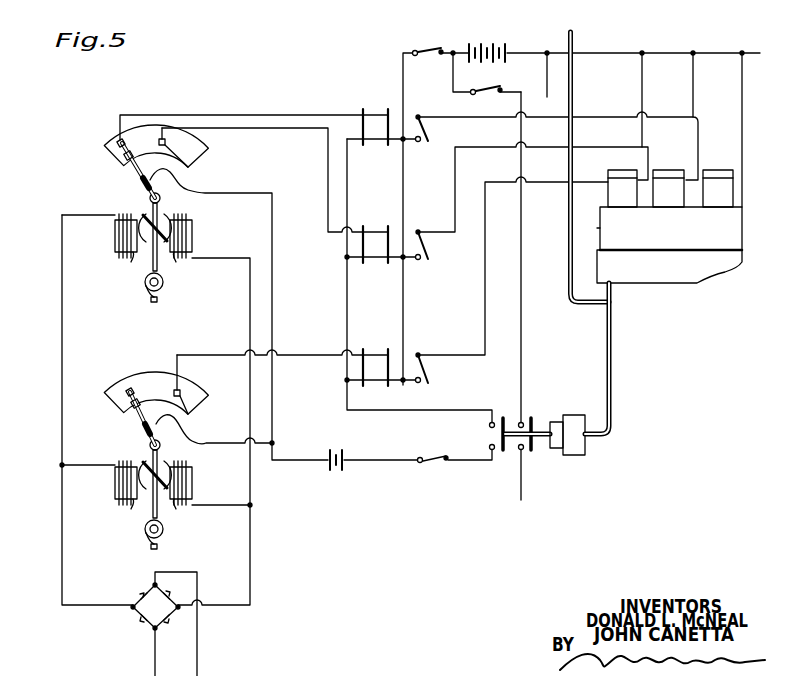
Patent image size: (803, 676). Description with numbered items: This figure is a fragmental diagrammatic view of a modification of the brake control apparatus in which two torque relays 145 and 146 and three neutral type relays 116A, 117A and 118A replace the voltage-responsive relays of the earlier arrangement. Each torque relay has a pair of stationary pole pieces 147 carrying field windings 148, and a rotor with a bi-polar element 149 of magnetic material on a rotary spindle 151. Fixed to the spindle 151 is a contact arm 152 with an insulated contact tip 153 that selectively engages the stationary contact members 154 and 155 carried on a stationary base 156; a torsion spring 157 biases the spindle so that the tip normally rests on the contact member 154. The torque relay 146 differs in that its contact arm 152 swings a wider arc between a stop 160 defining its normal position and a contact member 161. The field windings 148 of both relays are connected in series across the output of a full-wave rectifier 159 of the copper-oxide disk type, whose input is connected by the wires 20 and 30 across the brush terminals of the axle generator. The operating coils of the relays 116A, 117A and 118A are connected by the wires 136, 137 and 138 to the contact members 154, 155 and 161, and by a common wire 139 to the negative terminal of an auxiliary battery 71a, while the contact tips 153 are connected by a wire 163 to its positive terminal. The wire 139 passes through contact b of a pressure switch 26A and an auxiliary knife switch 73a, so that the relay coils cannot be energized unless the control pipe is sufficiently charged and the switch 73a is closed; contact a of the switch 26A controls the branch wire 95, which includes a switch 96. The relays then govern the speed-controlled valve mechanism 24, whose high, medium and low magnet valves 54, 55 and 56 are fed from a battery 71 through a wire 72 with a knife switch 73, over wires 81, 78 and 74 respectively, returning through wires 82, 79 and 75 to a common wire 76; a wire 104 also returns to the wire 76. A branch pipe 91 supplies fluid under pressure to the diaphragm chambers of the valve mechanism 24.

The wire 136 is at (271, 113).
The wire 137 is at (275, 133).
The wire 163 is at (253, 193).
The contact member 154 is at (116, 144).
The contact tip 153 is at (125, 160).
The contact arm 152 is at (145, 187).
The torque relay 145 is at (142, 201).
The torque relay 146 is at (142, 453).
The rotary spindle 151 is at (160, 203).
The stationary pole pieces 147 is at (114, 238).
The field winding 148 is at (130, 260).
The bi-polar element 149 is at (148, 256).
The torsion spring 157 is at (164, 290).
The contact member 155 is at (198, 163).
The stationary base 156 is at (195, 146).
The contact member 161 is at (168, 385).
The stop 160 is at (125, 393).
The full-wave rectifier 159 is at (138, 597).
The wire 20 is at (151, 656).
The wire 30 is at (198, 657).
The knife switch 73 is at (432, 51).
The battery 71 is at (487, 46).
The branch pipe 91 is at (570, 33).
The wire 76 is at (603, 52).
The wire 72 is at (401, 77).
The neutral type relay 116A is at (394, 101).
The neutral type relay 117A is at (394, 221).
The neutral type relay 118A is at (394, 343).
The wire 74 is at (451, 118).
The wire 78 is at (503, 149).
The wire 81 is at (513, 183).
The switch 96 is at (494, 93).
The wire 104 is at (546, 78).
The wire 82 is at (641, 84).
The wire 79 is at (692, 84).
The wire 75 is at (741, 84).
The high magnet valve 54 is at (634, 169).
The medium magnet valve 55 is at (681, 169).
The low magnet valve 56 is at (731, 169).
The speed-controlled valve mechanism 24 is at (760, 224).
The branch wire 95 is at (522, 352).
The common wire 139 is at (346, 297).
The wire 138 is at (283, 357).
The auxiliary switch 73a is at (450, 446).
The auxiliary battery 71a is at (338, 469).
The pressure switch 26A is at (591, 407).